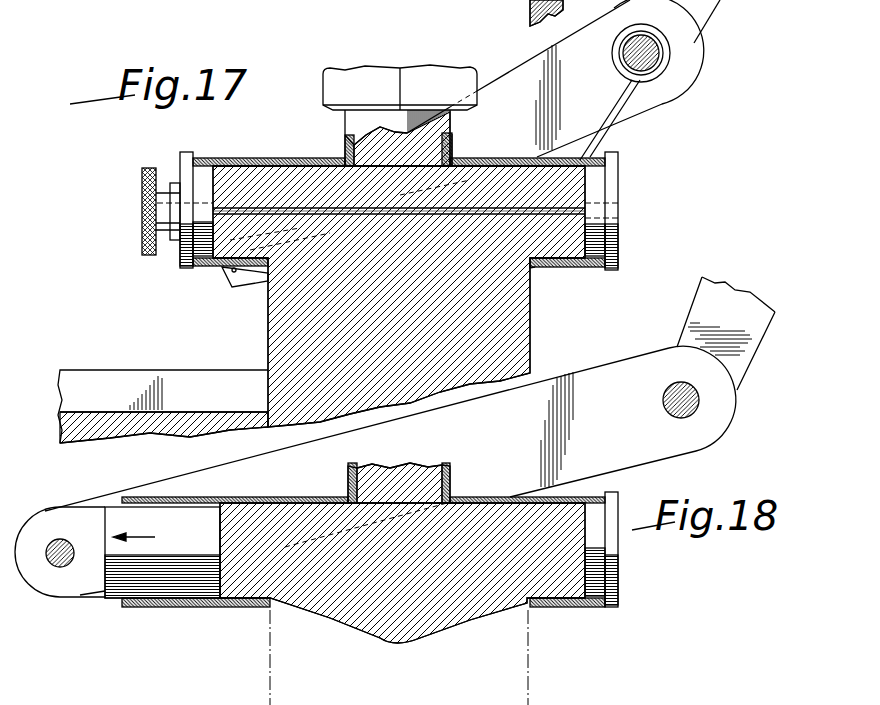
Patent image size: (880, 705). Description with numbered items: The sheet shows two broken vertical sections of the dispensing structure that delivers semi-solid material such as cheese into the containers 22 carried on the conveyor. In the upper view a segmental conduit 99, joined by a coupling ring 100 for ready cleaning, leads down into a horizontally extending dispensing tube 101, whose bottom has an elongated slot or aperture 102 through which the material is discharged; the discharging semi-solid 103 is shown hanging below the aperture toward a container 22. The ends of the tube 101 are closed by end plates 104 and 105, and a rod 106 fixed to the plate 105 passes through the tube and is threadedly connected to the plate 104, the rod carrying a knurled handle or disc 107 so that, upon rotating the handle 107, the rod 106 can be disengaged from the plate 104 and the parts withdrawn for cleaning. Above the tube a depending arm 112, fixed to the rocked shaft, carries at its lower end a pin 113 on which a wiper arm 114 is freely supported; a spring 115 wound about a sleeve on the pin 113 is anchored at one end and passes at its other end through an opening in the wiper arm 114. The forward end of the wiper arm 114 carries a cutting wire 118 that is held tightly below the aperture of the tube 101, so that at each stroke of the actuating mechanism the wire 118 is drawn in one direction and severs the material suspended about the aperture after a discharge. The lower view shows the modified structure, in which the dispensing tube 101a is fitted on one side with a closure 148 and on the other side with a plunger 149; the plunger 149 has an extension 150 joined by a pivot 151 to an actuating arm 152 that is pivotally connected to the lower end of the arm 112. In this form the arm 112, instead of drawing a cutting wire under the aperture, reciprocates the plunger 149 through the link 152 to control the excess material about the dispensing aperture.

In FIG. 17, the container 22 is at (165, 380).
In FIG. 17, the conduit 99 is at (345, 136).
In FIG. 18, the conduit 99 is at (450, 483).
In FIG. 17, the coupling ring 100 is at (323, 90).
In FIG. 17, the dispensing tube 101 is at (564, 268).
In FIG. 18, the dispensing tube 101a is at (563, 608).
In FIG. 17, the elongated slot or aperture 102 is at (519, 268).
In FIG. 17, the discharging semi-solid 103 is at (280, 327).
In FIG. 17, the end plate 104 is at (614, 187).
In FIG. 17, the end plate 105 is at (184, 152).
In FIG. 17, the rod 106 is at (508, 212).
In FIG. 17, the knurled handle or disc 107 is at (142, 190).
In FIG. 17, the depending arm 112 is at (712, 8).
In FIG. 18, the depending arm 112 is at (700, 311).
In FIG. 17, the pin 113 is at (660, 55).
In FIG. 18, the pin 113 is at (697, 406).
In FIG. 17, the wiper arm 114 is at (531, 71).
In FIG. 17, the spring 115 is at (612, 138).
In FIG. 17, the cutting wire 118 is at (224, 278).
In FIG. 18, the closure 148 is at (613, 556).
In FIG. 18, the plunger 149 is at (160, 592).
In FIG. 18, the extension 150 is at (58, 523).
In FIG. 18, the pivot 151 is at (62, 566).
In FIG. 18, the actuating arm 152 is at (618, 375).